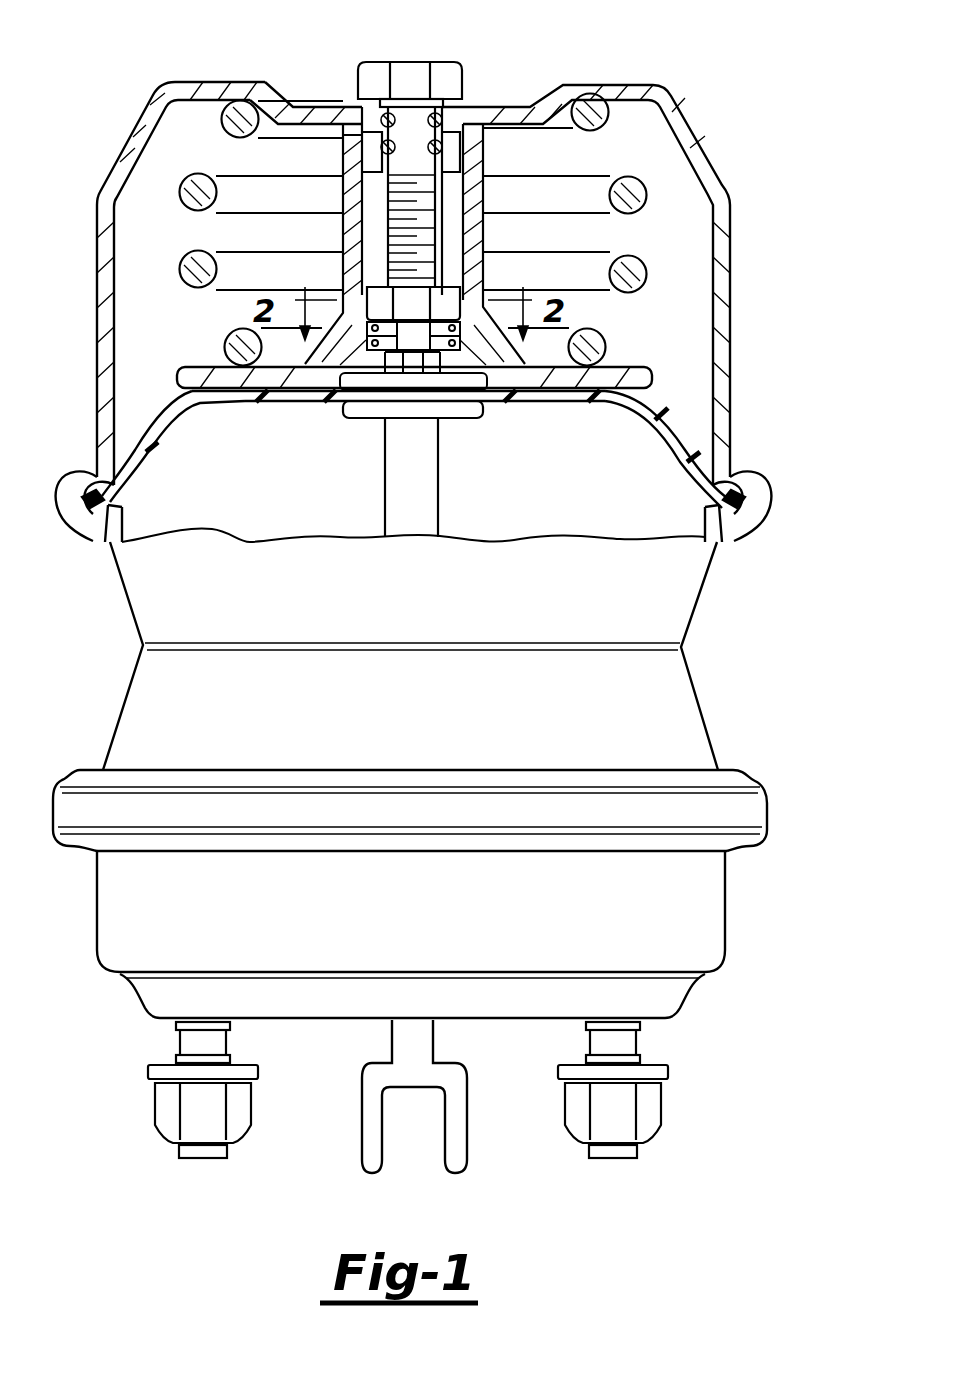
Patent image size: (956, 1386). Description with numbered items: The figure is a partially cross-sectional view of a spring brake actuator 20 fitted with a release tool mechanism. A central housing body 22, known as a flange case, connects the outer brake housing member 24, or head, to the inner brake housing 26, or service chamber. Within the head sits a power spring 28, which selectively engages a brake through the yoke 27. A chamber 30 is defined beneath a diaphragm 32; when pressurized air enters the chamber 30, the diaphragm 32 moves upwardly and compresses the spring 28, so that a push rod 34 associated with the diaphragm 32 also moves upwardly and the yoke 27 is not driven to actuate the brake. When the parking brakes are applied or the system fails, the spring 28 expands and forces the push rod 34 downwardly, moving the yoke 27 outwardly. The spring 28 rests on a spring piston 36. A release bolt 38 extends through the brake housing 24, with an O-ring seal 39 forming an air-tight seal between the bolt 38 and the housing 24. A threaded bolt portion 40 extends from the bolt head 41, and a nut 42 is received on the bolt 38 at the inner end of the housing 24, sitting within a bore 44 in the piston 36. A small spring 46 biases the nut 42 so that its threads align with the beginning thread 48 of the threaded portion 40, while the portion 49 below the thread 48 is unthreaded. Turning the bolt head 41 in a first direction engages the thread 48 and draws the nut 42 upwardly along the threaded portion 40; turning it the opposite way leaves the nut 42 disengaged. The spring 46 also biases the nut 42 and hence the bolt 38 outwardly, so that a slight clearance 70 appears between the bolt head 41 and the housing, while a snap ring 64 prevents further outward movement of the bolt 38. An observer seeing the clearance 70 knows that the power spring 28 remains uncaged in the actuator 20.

The spring brake actuator 20 is at (775, 252).
The central housing body 22 is at (473, 711).
The outer brake housing member 24 is at (731, 378).
The inner brake housing 26 is at (473, 914).
The yoke 27 is at (480, 1107).
The power spring 28 is at (634, 268).
The chamber 30 is at (310, 511).
The diaphragm 32 is at (150, 463).
The push rod 34 is at (430, 512).
The spring piston 36 is at (628, 373).
The release bolt 38 is at (414, 108).
The O-ring seal 39 is at (381, 116).
The threaded bolt portion 40 is at (440, 195).
The bolt head 41 is at (407, 75).
The nut 42 is at (442, 290).
The bore 44 is at (368, 232).
The spring 46 is at (505, 370).
The beginning thread 48 is at (380, 405).
The unthreaded portion 49 is at (437, 420).
The snap ring 64 is at (372, 138).
The clearance 70 is at (470, 104).